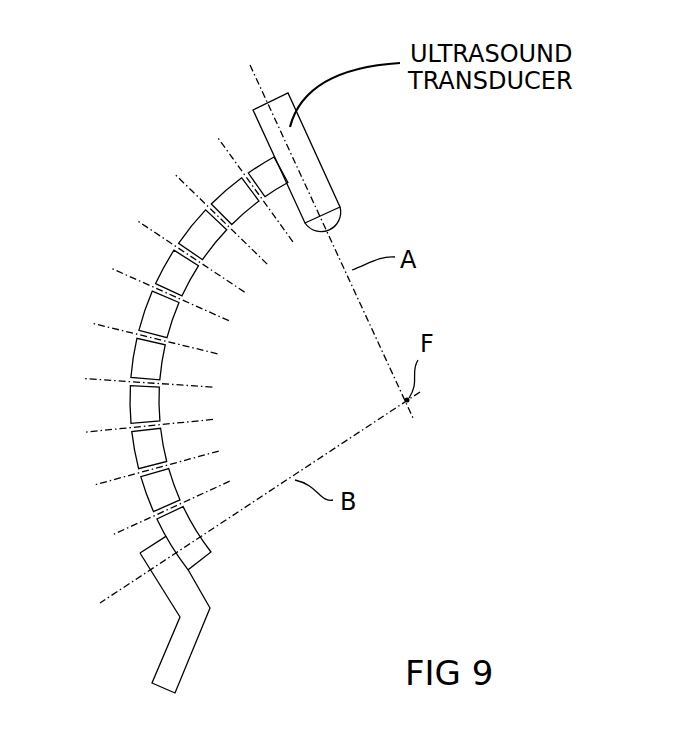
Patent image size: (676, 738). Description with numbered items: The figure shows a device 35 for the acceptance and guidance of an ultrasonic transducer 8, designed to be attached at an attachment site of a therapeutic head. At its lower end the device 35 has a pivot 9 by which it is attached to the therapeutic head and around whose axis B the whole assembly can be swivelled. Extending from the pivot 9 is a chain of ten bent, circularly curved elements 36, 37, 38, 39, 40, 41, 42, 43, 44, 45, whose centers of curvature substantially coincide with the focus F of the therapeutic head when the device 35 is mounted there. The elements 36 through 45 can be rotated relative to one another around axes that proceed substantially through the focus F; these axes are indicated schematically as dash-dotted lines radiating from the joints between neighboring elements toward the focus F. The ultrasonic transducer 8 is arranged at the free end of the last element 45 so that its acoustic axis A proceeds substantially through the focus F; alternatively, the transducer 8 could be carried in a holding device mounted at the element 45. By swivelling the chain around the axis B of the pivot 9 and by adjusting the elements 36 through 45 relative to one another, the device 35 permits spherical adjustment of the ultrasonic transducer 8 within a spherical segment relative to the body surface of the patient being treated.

The ultrasonic transducer 8 is at (310, 157).
The pivot 9 is at (183, 647).
The device 35 is at (287, 347).
The bent, circularly curved element 36 is at (196, 557).
The bent, circularly curved element 37 is at (157, 497).
The bent, circularly curved element 38 is at (140, 450).
The bent, circularly curved element 39 is at (138, 402).
The bent, circularly curved element 40 is at (143, 353).
The bent, circularly curved element 41 is at (157, 312).
The bent, circularly curved element 42 is at (173, 267).
The bent, circularly curved element 43 is at (197, 233).
The bent, circularly curved element 44 is at (233, 197).
The bent, circularly curved element 45 is at (263, 173).